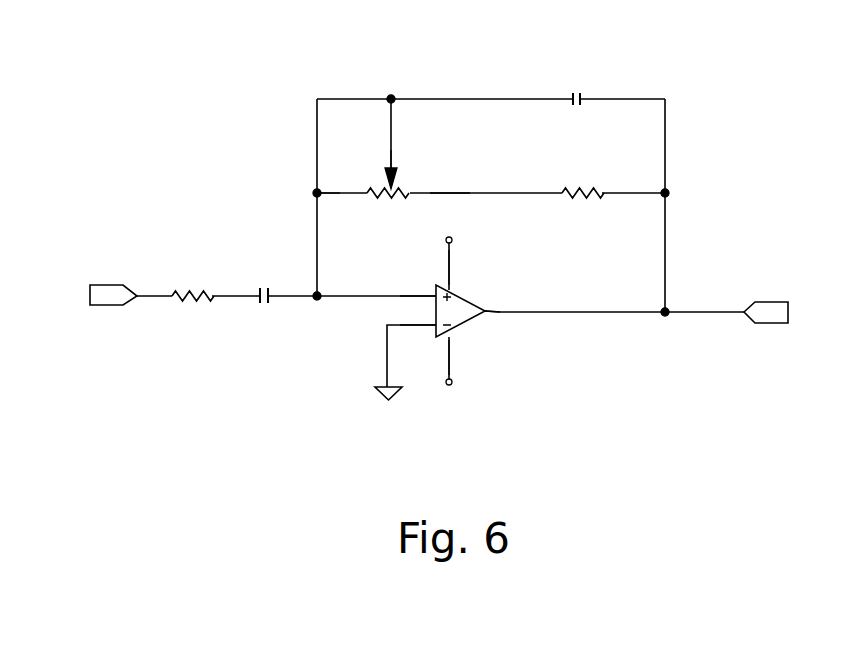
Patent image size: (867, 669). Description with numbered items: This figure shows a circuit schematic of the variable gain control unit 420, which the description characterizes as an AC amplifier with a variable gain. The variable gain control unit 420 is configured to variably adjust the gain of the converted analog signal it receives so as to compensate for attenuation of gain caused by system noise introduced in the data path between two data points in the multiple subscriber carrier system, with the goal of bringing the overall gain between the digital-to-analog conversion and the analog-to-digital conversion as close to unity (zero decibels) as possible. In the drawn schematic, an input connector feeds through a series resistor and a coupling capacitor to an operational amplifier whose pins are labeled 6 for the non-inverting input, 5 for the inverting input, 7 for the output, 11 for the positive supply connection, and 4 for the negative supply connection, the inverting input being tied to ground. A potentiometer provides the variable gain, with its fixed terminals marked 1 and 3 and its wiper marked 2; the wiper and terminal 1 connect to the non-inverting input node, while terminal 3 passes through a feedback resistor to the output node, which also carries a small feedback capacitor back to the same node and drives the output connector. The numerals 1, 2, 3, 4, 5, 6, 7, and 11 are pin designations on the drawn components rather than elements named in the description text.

The variable gain control unit 420 is at (456, 31).
The potentiometer R12 terminal 1 is at (328, 183).
The potentiometer R12 wiper terminal 2 is at (375, 156).
The potentiometer R12 terminal 3 is at (450, 183).
The op-amp negative supply pin 4 is at (436, 357).
The op-amp inverting input pin 5 is at (418, 315).
The op-amp non-inverting input pin 6 is at (418, 286).
The op-amp output pin 7 is at (492, 301).
The op-amp positive supply pin 11 is at (438, 267).